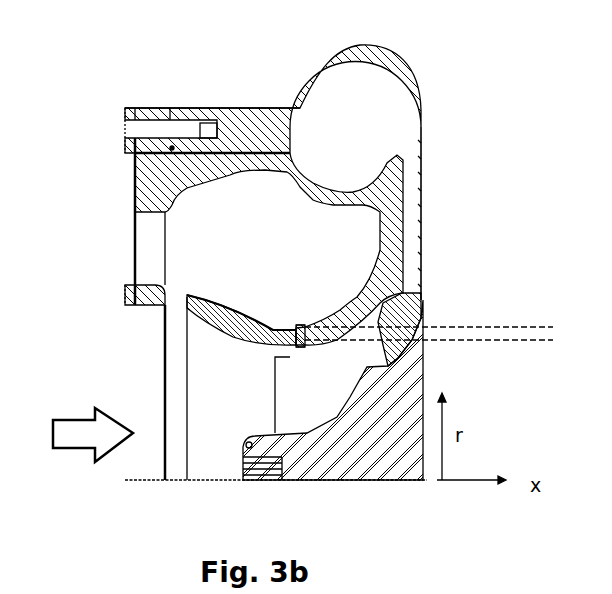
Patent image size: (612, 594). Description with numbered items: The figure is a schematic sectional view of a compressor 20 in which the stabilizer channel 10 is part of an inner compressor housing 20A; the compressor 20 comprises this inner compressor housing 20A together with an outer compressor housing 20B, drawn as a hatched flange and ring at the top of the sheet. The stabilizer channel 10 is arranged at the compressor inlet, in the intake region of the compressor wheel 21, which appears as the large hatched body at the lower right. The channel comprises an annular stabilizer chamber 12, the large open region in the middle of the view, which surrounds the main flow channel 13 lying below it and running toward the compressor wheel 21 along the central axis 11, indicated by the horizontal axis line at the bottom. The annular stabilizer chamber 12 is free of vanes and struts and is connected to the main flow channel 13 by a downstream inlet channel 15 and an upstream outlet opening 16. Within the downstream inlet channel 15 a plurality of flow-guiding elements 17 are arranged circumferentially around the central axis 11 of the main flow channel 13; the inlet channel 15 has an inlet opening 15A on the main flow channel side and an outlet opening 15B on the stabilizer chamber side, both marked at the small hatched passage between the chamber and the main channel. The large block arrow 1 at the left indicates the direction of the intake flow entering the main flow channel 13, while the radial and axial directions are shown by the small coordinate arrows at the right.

The exhaust gas flow direction 1 is at (110, 444).
The stabilizer channel 10 is at (178, 264).
The central axis 11 is at (140, 481).
The annular stabilizer chamber 12 is at (264, 233).
The main flow channel 13 is at (227, 420).
The inlet channel 15 is at (553, 327).
The inlet opening of the inlet channel 15A is at (296, 352).
The outlet opening of the inlet channel 15B is at (295, 322).
The outlet opening of the stabilizer chamber 16 is at (175, 310).
The flow-guiding elements 17 is at (293, 345).
The compressor 20 is at (476, 56).
The inner compressor housing 20A is at (147, 207).
The outer compressor housing 20B is at (228, 117).
The compressor wheel 21 is at (353, 465).